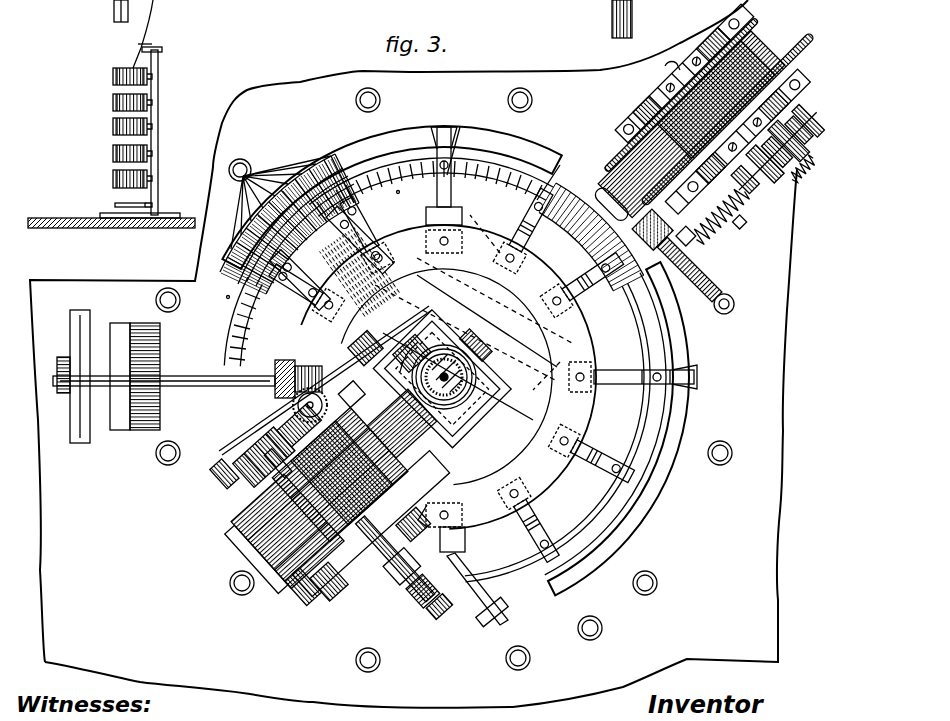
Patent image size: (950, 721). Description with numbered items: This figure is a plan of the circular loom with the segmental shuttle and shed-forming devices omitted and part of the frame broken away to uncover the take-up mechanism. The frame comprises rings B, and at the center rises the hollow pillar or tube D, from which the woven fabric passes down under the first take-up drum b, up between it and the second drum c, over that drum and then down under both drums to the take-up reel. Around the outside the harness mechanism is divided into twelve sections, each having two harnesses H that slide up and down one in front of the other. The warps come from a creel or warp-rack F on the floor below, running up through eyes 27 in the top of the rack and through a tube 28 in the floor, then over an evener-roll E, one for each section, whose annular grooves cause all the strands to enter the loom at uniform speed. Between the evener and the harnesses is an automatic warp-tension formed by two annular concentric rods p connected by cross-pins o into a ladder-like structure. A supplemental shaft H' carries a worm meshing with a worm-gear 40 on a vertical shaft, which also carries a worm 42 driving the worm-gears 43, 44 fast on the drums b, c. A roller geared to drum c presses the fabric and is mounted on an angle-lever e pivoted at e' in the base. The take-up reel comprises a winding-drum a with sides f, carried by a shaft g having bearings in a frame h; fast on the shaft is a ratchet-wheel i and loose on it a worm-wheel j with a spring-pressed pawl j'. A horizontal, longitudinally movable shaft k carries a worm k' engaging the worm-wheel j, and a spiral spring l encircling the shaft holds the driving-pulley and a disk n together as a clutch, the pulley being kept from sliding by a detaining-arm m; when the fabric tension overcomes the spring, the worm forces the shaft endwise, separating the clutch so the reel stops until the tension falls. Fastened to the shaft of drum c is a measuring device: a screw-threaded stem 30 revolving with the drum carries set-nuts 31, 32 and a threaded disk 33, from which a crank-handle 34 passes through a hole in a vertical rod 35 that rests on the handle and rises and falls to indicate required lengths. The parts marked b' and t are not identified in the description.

The holes or eyes 27 is at (146, 47).
The tube 28 is at (536, 102).
The warp-rack F is at (152, 110).
The evener-roll E is at (238, 234).
The annular concentric rods p is at (374, 170).
The cross-pins o is at (311, 240).
The harnesses H is at (335, 262).
The supplemental shaft H' is at (174, 384).
The worm-gear 40 is at (380, 411).
The worm 42 is at (311, 365).
The worm-gear 43 is at (256, 453).
The worm-gear 44 is at (370, 348).
The hollow pillar D is at (432, 348).
The angle-lever e is at (339, 460).
The pivot e' is at (218, 486).
The winding-drum a is at (246, 540).
The second take-up drum c is at (360, 456).
The first take-up drum b is at (481, 346).
The arm b' is at (360, 404).
The rings B is at (448, 377).
The screw-threaded stem 30 is at (426, 532).
The set-nut 31 is at (438, 614).
The set-nut 32 is at (446, 563).
The threaded disk 33 is at (408, 597).
The crank-handle 34 is at (458, 578).
The vertical rod 35 is at (494, 612).
The hole t is at (595, 630).
The shaft g is at (664, 63).
The frame h is at (644, 108).
The sides f is at (806, 36).
The ratchet-wheel i is at (743, 179).
The worm-wheel j is at (778, 152).
The spring-pressed pawl j' is at (808, 114).
The horizontal shaft k is at (720, 217).
The worm k' is at (807, 169).
The spiral spring l is at (742, 224).
The detaining-arm m is at (702, 256).
The disk n is at (703, 300).